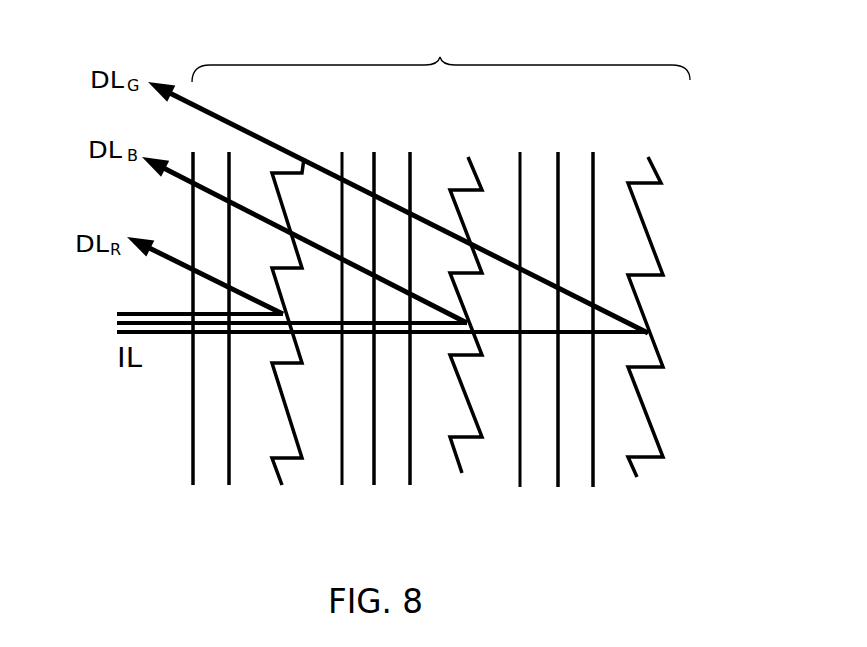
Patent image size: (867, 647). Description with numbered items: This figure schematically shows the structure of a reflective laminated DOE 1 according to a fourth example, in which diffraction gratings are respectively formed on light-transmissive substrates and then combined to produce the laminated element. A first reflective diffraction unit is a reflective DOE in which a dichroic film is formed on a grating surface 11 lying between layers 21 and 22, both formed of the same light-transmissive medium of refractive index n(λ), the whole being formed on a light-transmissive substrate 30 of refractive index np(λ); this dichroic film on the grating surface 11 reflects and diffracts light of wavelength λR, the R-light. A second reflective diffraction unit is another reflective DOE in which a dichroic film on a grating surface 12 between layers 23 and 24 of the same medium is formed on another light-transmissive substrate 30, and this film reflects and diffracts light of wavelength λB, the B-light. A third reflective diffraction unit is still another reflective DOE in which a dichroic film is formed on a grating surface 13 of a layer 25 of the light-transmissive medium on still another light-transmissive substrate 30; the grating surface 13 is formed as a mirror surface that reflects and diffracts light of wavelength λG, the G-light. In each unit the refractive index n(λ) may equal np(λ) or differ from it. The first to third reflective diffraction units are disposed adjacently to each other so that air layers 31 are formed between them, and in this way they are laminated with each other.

The reflective laminated DOE 1 is at (441, 52).
The grating surface 11 is at (295, 438).
The grating surface 12 is at (453, 445).
The grating surface 13 is at (657, 437).
The layer 21 is at (255, 399).
The layer 22 is at (315, 399).
The layer 23 is at (437, 399).
The layer 24 is at (495, 399).
The layer 25 is at (617, 399).
The light-transmissive substrate 30 is at (217, 490).
The air layer 31 is at (362, 160).